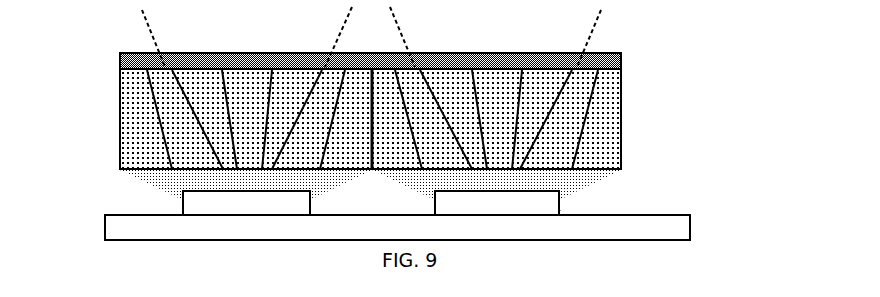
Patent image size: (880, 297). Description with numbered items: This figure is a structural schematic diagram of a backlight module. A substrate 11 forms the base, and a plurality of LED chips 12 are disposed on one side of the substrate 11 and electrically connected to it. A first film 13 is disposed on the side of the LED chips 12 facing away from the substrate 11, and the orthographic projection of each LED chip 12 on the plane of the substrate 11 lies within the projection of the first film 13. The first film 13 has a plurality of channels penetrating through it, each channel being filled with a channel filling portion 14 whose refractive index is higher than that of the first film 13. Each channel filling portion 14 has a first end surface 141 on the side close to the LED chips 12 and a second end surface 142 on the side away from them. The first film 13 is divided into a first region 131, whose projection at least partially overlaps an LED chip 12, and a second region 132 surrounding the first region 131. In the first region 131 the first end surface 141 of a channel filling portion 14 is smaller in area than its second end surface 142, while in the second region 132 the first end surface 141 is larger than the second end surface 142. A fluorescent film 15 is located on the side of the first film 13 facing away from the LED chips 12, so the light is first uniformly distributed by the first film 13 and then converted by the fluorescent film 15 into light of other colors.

The substrate 11 is at (692, 221).
The LED chip 12 is at (561, 202).
The first film 13 is at (411, 118).
The channel filling portion 14 is at (604, 139).
The first end surface 141 is at (113, 168).
The second end surface 142 is at (113, 70).
The fluorescent film 15 is at (623, 62).
The first region 131 is at (333, 32).
The second region 132 is at (403, 42).